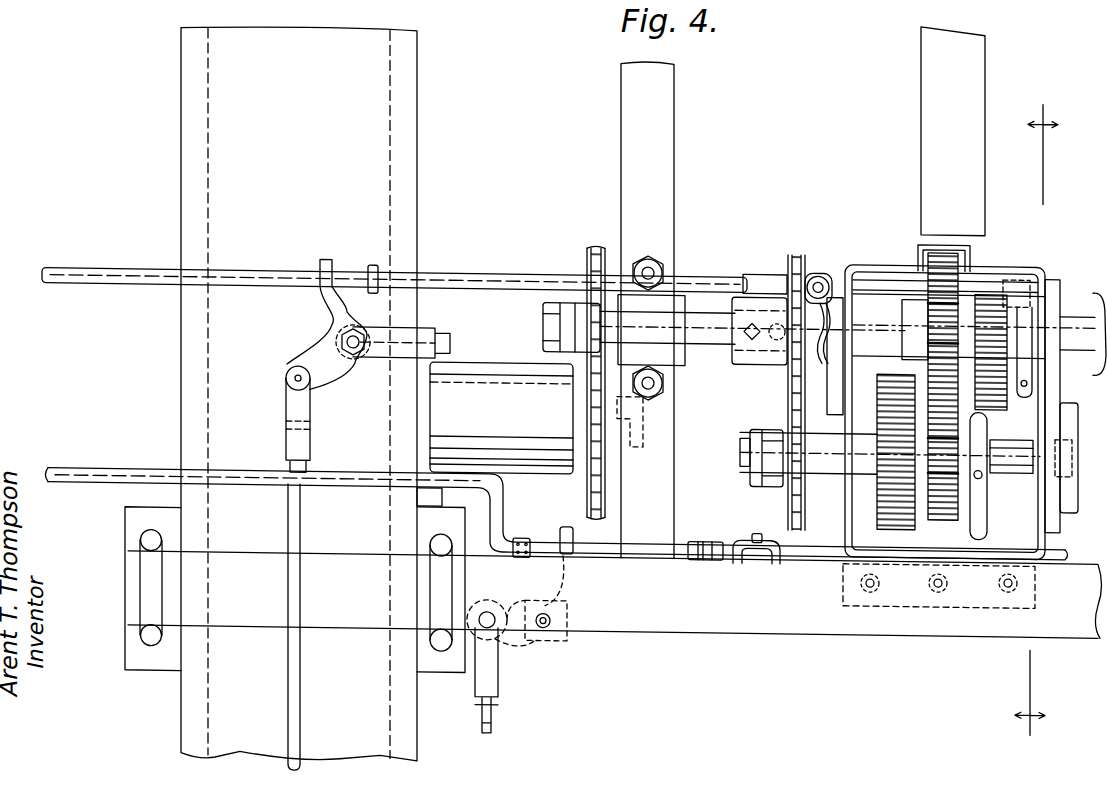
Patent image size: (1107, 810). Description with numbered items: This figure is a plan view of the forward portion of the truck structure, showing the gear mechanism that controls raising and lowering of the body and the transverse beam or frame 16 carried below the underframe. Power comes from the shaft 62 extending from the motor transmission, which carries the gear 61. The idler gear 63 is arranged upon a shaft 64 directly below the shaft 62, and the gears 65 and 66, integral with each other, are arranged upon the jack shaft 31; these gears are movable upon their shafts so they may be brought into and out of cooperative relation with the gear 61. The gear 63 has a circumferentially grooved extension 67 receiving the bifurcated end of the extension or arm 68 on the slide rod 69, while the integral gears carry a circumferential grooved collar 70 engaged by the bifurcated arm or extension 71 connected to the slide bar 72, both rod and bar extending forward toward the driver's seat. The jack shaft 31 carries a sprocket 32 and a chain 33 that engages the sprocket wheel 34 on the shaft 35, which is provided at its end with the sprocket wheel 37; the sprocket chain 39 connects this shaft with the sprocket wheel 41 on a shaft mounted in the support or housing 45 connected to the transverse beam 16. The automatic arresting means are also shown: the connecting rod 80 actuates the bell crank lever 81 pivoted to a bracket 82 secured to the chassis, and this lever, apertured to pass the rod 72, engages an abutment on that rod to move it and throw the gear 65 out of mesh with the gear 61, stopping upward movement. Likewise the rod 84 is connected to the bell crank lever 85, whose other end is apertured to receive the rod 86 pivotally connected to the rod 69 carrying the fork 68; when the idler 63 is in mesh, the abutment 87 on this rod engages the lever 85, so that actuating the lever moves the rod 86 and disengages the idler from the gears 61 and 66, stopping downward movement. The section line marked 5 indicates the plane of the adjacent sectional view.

The section line 5- 5 is at (1036, 421).
The transverse beam or frame 16 is at (206, 672).
The jack shaft 31 is at (985, 447).
The sprocket 32 is at (780, 477).
The chain 33 is at (790, 386).
The sprocket wheel 34 is at (775, 355).
The shaft 35 is at (712, 337).
The sprocket wheel 37 is at (545, 320).
The sprocket chain 39 is at (590, 386).
The sprocket wheel 41 is at (588, 490).
The support or housing 45 is at (528, 417).
The gear 61 is at (958, 246).
The shaft 62 is at (1086, 341).
The idler gear 63 is at (995, 283).
The shaft 64 is at (875, 356).
The gear 65 is at (880, 500).
The gear 66 is at (940, 500).
The circumferentially grooved extension 67 is at (1032, 300).
The extension or arm 68 is at (1030, 270).
The slide rod 69 is at (865, 282).
The circumferential grooved collar 70 is at (672, 603).
The bifurcated arm or extension 71 is at (984, 504).
The slide bar 72 is at (822, 541).
The connecting rod 80 is at (492, 715).
The bell crank lever 81 is at (505, 633).
The bracket 82 is at (521, 531).
The rod 84 is at (299, 712).
The bell crank lever 85 is at (330, 386).
The rod 86 is at (452, 267).
The abutment 87 is at (373, 260).